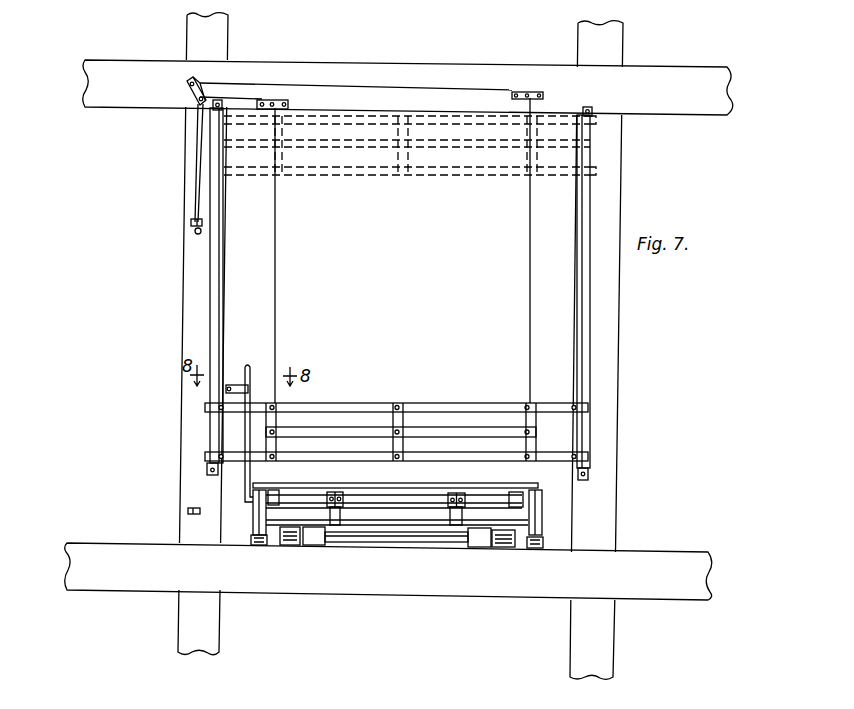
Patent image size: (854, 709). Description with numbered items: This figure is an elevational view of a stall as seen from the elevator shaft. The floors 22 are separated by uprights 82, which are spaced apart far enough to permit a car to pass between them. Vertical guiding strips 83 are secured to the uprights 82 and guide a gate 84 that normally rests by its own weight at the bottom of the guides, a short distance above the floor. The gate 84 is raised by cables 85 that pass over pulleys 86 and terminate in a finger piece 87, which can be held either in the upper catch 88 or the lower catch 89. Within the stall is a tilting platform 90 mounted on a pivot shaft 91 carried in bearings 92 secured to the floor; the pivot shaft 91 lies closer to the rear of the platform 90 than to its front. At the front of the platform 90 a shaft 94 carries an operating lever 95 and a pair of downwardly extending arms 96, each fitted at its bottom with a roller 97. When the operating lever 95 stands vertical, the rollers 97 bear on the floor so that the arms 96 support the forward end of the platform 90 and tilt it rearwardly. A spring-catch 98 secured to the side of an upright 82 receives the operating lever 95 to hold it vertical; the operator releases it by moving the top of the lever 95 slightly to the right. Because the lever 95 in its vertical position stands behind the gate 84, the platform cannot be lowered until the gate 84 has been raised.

The floor 22 is at (127, 100).
The upright 82 is at (192, 337).
The vertical guiding strip 83 is at (217, 280).
The gate 84 is at (387, 403).
The cable 85 is at (197, 145).
The pulley 86 is at (203, 100).
The finger piece 87 is at (197, 234).
The upper catch 88 is at (191, 224).
The lower catch 89 is at (188, 512).
The tilting platform 90 is at (538, 487).
The pivot shaft 91 is at (428, 543).
The bearing 92 is at (317, 546).
The shaft 94 is at (330, 495).
The operating lever 95 is at (246, 430).
The downwardly extending arm 96 is at (252, 511).
The roller 97 is at (262, 546).
The spring-catch 98 is at (226, 389).